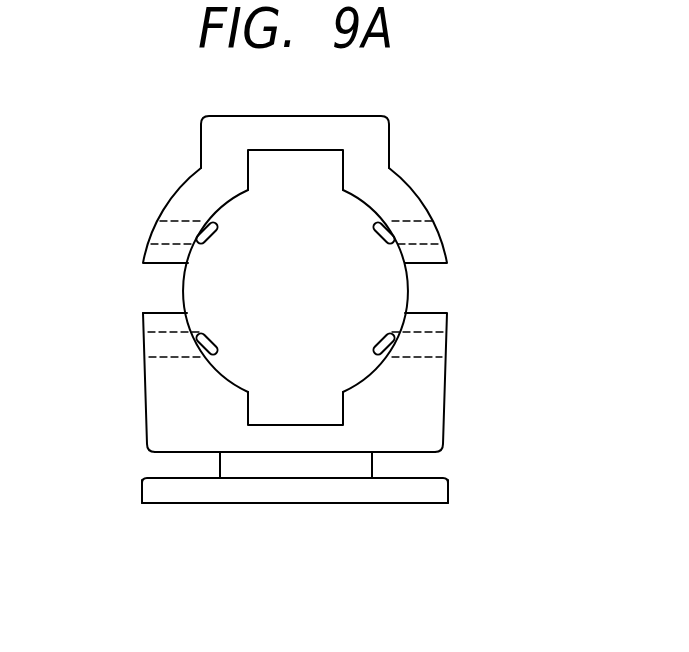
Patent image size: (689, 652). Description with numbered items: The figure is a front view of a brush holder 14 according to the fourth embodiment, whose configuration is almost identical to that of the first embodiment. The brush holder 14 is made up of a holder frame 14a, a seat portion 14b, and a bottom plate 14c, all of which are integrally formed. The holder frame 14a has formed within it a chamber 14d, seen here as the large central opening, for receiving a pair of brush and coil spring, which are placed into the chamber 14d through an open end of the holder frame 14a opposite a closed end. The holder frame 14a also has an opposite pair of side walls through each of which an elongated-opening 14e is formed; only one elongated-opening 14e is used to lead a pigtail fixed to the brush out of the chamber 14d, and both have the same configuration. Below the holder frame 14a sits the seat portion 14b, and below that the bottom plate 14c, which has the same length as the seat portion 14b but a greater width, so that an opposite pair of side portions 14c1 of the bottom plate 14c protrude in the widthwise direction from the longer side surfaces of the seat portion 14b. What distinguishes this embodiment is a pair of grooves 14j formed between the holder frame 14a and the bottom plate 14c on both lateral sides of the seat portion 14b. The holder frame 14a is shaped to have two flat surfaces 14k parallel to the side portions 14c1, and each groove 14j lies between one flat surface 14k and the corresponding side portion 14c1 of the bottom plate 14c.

The brush holder 14 is at (174, 131).
The holder frame 14a is at (398, 196).
The elongated-opening 14e is at (430, 288).
The chamber 14d is at (318, 304).
The groove 14j is at (208, 468).
The flat surface 14k is at (168, 454).
The seat portion 14b is at (335, 465).
The bottom plate 14c is at (233, 490).
The side portion 14c1 is at (172, 488).